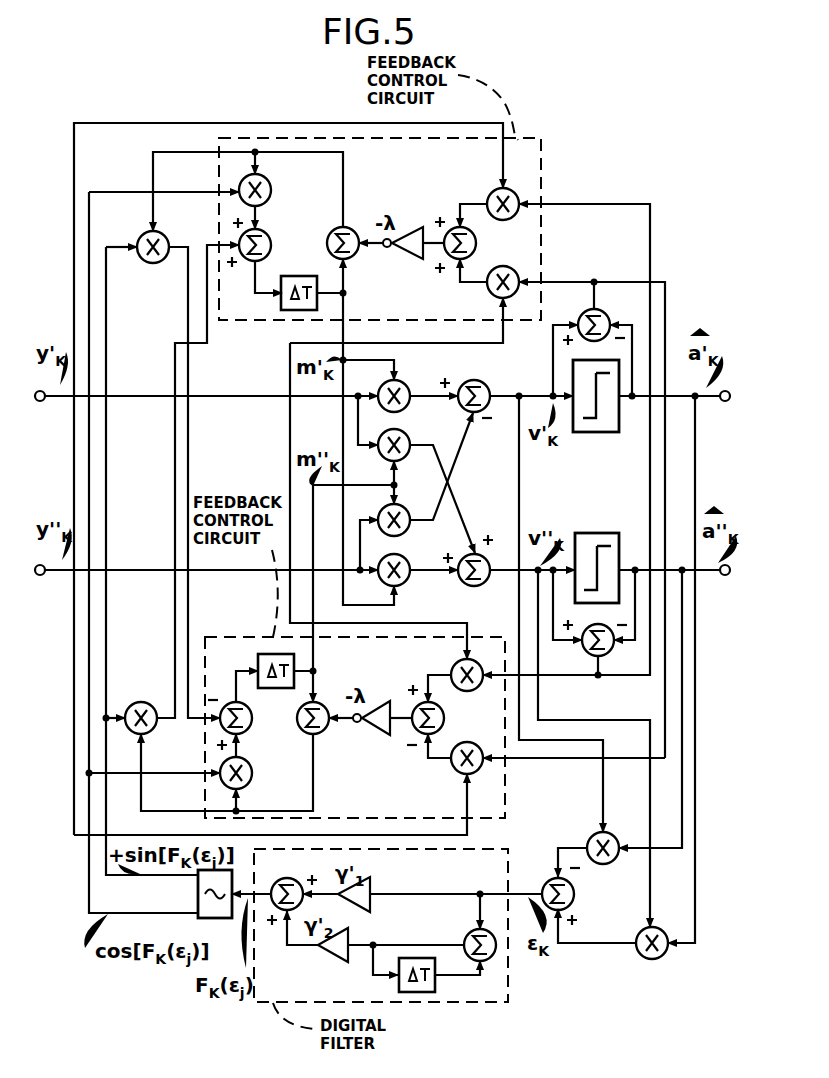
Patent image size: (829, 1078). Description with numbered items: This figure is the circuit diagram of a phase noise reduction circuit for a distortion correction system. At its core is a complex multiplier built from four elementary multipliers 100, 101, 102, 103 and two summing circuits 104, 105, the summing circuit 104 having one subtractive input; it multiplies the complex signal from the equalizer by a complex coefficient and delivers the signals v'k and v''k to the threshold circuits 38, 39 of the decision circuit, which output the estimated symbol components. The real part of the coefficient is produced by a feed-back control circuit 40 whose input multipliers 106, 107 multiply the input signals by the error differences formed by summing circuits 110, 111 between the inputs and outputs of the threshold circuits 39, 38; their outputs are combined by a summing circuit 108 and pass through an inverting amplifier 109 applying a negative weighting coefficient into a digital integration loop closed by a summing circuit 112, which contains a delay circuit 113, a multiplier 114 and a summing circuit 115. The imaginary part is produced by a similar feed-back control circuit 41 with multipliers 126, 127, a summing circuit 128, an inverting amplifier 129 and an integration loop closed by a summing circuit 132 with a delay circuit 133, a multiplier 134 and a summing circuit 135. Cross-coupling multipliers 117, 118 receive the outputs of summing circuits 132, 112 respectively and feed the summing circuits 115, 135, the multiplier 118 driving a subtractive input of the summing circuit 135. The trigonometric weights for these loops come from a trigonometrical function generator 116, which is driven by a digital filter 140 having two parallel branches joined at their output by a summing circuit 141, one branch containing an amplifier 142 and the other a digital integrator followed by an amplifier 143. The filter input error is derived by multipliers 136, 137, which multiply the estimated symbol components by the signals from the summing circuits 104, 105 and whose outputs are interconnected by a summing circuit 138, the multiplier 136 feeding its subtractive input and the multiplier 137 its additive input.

The threshold circuit 38 is at (607, 433).
The threshold circuit 39 is at (588, 533).
The feed-back control circuit 40 is at (530, 185).
The feed-back control circuit 41 is at (243, 636).
The elementary multiplier 100 is at (401, 381).
The elementary multiplier 101 is at (406, 434).
The elementary multiplier 102 is at (402, 505).
The elementary multiplier 103 is at (406, 559).
The summing circuit 104 is at (476, 381).
The summing circuit 105 is at (462, 584).
The multiplier 106 is at (491, 192).
The multiplier 107 is at (491, 292).
The summing circuit 108 is at (477, 243).
The inverting amplifier 109 is at (418, 258).
The summing circuit 110 is at (586, 648).
The summing circuit 111 is at (606, 315).
The summing circuit 112 is at (352, 228).
The delay circuit 113 is at (282, 305).
The multiplier 114 is at (266, 180).
The summing circuit 115 is at (266, 235).
The trigonometrical function generator 116 is at (196, 890).
The multiplier 117 is at (150, 702).
The multiplier 118 is at (143, 236).
The multiplier 126 is at (460, 776).
The multiplier 127 is at (460, 660).
The summing circuit 128 is at (444, 712).
The inverting amplifier 129 is at (386, 735).
The summing circuit 132 is at (322, 700).
The delay circuit 133 is at (258, 662).
The multiplier 134 is at (252, 780).
The summing circuit 135 is at (252, 728).
The multiplier 136 is at (593, 834).
The multiplier 137 is at (641, 930).
The summing circuit 138 is at (552, 878).
The digital filter 140 is at (500, 965).
The summing circuit 141 is at (297, 880).
The amplifier 142 is at (372, 886).
The amplifier 143 is at (336, 962).